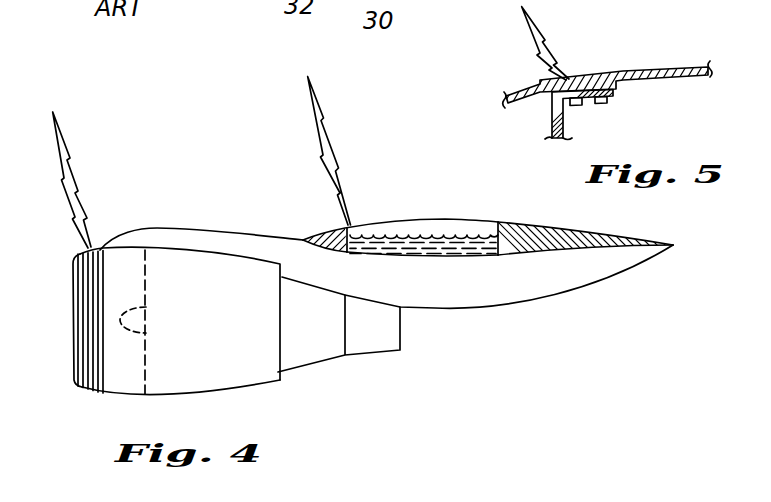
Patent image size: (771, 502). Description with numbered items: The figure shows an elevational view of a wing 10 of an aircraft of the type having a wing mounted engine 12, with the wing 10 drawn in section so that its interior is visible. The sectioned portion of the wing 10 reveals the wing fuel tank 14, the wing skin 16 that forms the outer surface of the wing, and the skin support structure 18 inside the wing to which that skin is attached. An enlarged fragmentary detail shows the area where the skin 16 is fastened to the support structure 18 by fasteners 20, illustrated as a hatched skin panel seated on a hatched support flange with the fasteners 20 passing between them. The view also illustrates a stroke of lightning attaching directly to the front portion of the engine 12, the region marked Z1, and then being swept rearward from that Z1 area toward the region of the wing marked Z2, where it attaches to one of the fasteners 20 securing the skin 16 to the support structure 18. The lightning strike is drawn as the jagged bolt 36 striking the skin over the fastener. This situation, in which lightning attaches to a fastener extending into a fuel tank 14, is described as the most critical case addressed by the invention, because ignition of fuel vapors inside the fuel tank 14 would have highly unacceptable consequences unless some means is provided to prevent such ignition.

In FIG. 4, the wing 10 is at (573, 278).
In FIG. 4, the wing mounted engine 12 is at (258, 383).
In FIG. 4, the wing fuel tank 14 is at (455, 228).
In FIG. 4, the wing skin 16 is at (390, 222).
In FIG. 5, the wing skin 16 is at (633, 70).
In FIG. 4, the skin support structure 18 is at (352, 224).
In FIG. 5, the skin support structure 18 is at (589, 100).
In FIG. 5, the fasteners 20 is at (577, 78).
In FIG. 5, the lightning strike (prior art) 36 is at (494, 14).
In FIG. 4, the lightning strike zone 1 Z1 is at (92, 386).
In FIG. 4, the lightning strike zone 2 Z2 is at (340, 230).